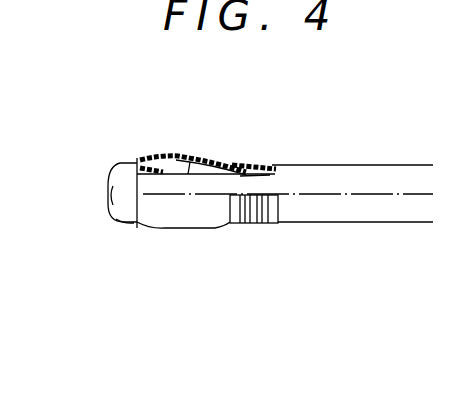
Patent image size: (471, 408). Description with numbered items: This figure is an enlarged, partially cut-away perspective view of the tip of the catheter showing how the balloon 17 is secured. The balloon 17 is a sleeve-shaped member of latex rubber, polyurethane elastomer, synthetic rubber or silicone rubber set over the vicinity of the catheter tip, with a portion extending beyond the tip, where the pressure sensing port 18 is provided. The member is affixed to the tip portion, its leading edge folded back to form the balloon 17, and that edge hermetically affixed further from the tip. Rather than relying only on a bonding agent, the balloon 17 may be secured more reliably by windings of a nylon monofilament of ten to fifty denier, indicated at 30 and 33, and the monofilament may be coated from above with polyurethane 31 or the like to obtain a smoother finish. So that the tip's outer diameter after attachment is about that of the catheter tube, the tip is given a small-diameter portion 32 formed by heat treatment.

The balloon 17 is at (173, 156).
The pressure sensing port 18 is at (108, 197).
The O-ring 30 is at (148, 159).
The polyurethane 31 is at (256, 165).
The small-diameter portion 32 is at (190, 162).
The cap shoulder 33 is at (124, 221).